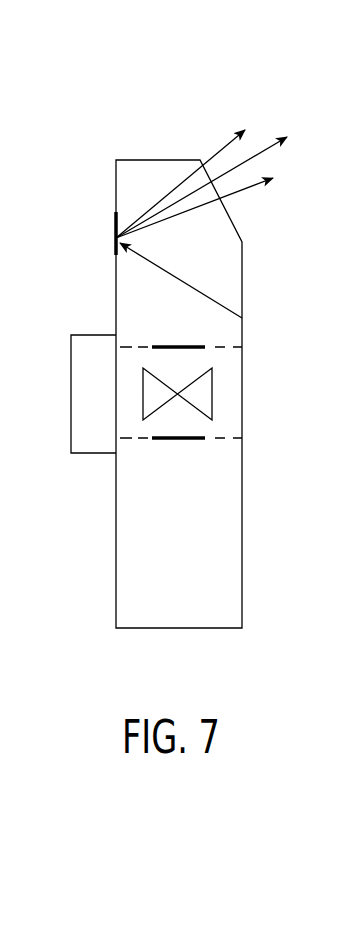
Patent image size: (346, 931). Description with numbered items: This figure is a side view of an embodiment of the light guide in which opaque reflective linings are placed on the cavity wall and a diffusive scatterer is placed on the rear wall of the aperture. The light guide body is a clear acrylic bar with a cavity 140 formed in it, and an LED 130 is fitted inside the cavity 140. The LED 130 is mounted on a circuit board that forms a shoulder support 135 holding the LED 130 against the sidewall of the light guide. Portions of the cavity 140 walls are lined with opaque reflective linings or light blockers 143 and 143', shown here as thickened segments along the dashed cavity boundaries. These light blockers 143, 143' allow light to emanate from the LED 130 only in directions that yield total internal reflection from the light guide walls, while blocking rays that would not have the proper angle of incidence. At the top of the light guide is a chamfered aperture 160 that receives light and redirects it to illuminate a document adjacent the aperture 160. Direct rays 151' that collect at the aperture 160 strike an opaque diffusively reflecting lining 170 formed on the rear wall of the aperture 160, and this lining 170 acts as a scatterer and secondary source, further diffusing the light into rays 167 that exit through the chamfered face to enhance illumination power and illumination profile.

The LED 130 is at (212, 400).
The shoulder support 135 is at (88, 350).
The cavity 140 is at (220, 440).
The light blocker 143 is at (213, 331).
The light blocker 143' is at (181, 478).
The direct rays 151' is at (207, 280).
The chamfered aperture 160 is at (233, 222).
The diffused rays 167 is at (282, 134).
The opaque diffusively reflecting lining 170 is at (113, 238).